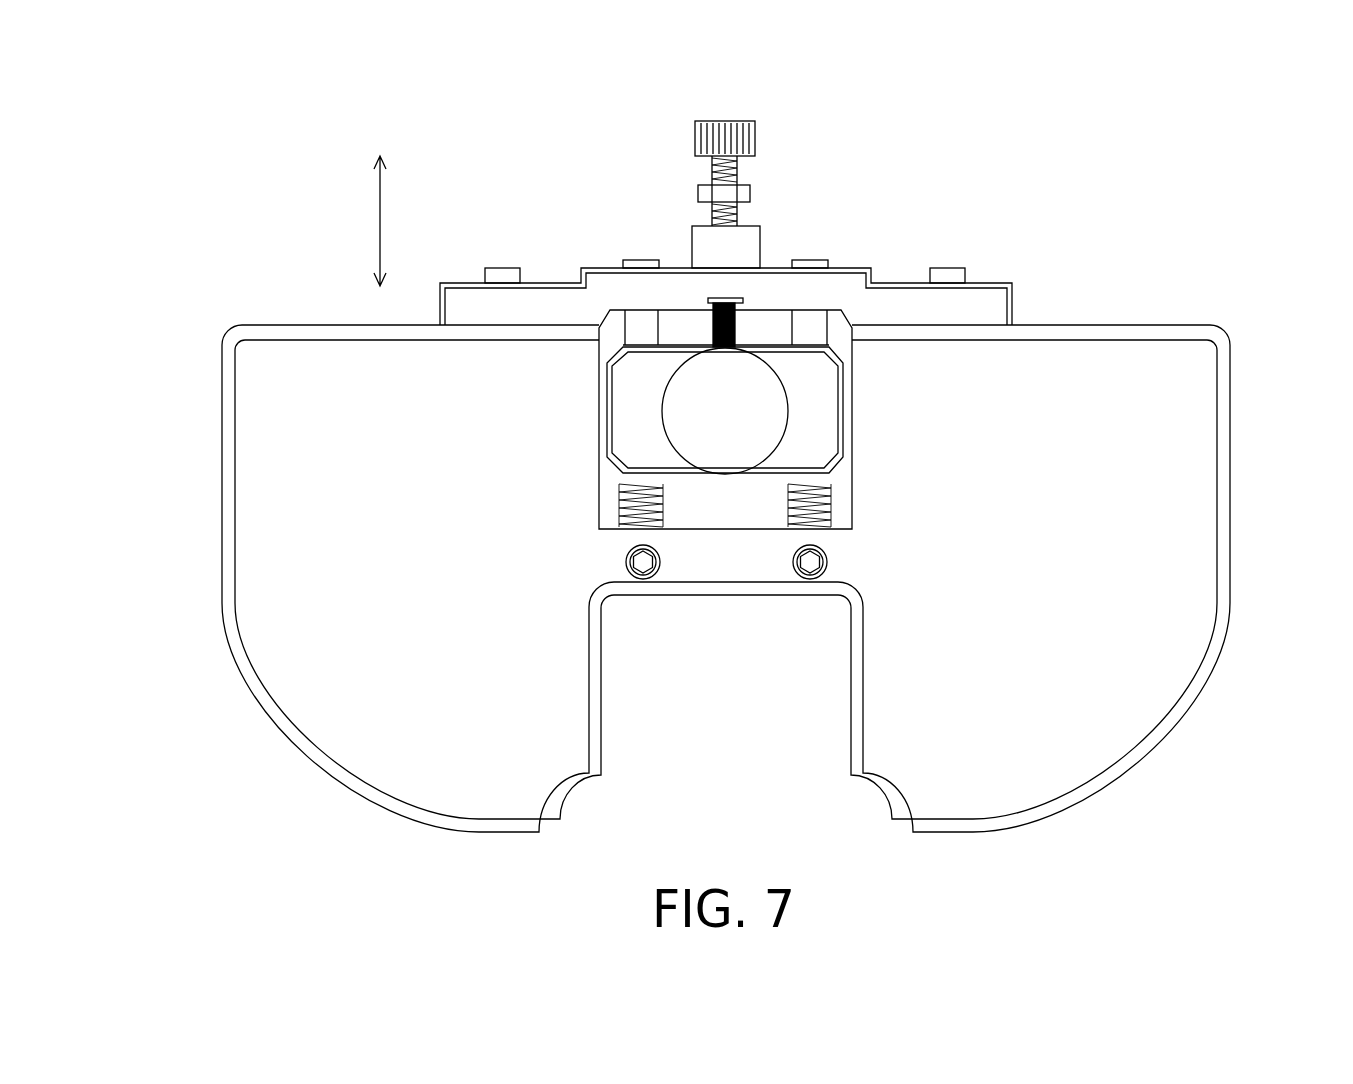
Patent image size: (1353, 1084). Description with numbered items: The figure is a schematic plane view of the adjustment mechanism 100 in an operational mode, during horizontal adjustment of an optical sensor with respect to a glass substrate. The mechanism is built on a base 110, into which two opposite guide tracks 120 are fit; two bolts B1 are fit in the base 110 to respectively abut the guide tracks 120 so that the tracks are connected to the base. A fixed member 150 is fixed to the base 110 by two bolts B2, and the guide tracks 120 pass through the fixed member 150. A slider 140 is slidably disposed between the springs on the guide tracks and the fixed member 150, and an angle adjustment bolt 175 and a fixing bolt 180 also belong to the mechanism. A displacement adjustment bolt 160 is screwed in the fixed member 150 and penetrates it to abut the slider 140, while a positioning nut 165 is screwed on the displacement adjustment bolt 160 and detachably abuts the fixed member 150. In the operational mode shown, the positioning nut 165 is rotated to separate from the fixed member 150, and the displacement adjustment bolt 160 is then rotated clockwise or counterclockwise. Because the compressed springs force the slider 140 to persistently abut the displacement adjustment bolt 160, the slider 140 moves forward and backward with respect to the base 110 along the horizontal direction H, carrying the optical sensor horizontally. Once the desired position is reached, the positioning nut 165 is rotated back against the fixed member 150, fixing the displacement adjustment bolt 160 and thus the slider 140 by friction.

The adjustment mechanism 100 is at (148, 159).
The base 110 is at (1230, 463).
The guide tracks 120 is at (642, 260).
The slider 140 is at (822, 400).
The fixed member 150 is at (549, 283).
The displacement adjustment bolt 160 is at (717, 118).
The positioning nut 165 is at (750, 193).
The angle adjustment bolt 175 is at (737, 330).
The fixing bolt 180 is at (725, 435).
The bolts B1 is at (643, 580).
The bolts B2 is at (503, 268).
The horizontal direction H is at (366, 221).